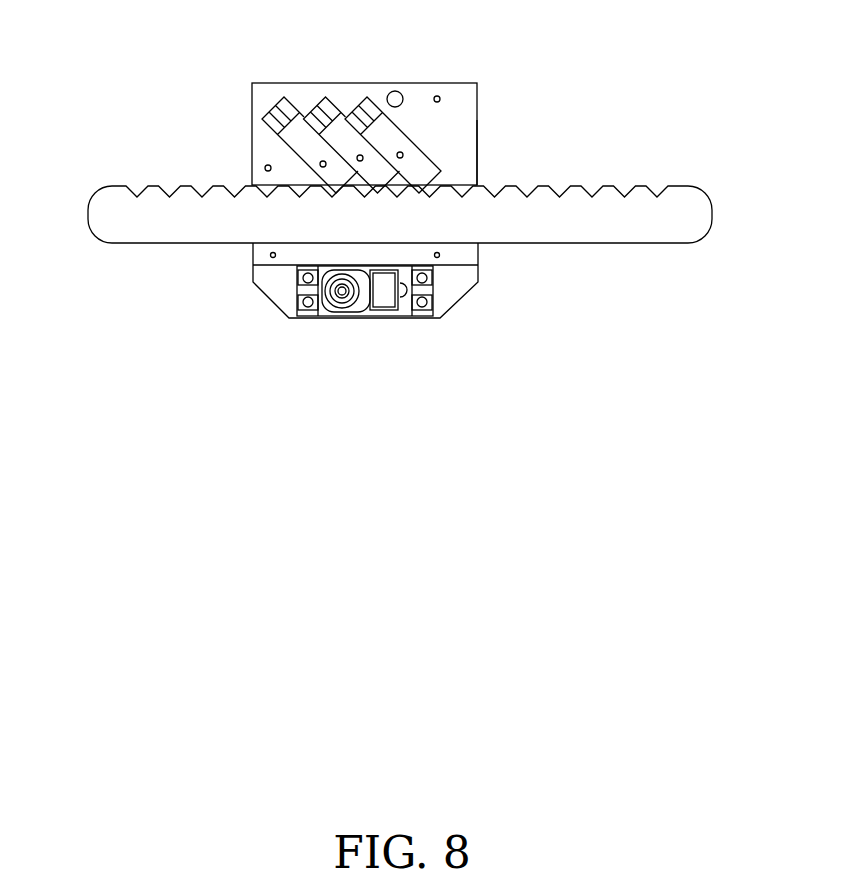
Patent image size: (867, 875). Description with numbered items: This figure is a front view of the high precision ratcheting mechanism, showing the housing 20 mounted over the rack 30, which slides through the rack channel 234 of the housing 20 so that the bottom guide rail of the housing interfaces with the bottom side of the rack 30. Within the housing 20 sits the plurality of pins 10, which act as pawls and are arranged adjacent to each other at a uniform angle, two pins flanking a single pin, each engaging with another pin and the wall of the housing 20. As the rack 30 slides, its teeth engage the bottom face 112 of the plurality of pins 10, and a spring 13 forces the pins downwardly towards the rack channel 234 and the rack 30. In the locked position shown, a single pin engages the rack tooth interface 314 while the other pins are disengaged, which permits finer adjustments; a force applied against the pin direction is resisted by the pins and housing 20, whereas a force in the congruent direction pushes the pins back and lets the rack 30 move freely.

The plurality of pins 10 is at (371, 147).
The spring 13 is at (272, 110).
The housing 20 is at (402, 113).
The rack 30 is at (372, 211).
The bottom face 112 is at (425, 177).
The rack channel 234 is at (470, 172).
The tooth interface 314 is at (180, 188).